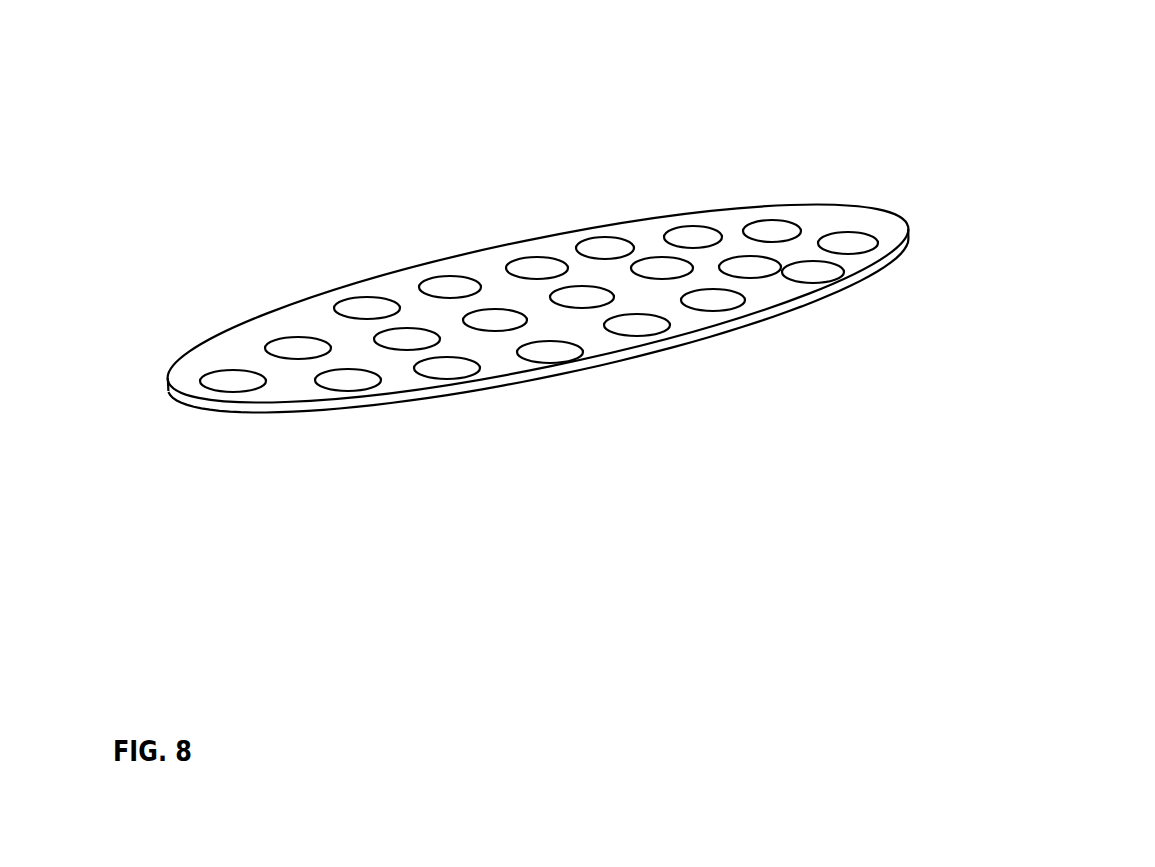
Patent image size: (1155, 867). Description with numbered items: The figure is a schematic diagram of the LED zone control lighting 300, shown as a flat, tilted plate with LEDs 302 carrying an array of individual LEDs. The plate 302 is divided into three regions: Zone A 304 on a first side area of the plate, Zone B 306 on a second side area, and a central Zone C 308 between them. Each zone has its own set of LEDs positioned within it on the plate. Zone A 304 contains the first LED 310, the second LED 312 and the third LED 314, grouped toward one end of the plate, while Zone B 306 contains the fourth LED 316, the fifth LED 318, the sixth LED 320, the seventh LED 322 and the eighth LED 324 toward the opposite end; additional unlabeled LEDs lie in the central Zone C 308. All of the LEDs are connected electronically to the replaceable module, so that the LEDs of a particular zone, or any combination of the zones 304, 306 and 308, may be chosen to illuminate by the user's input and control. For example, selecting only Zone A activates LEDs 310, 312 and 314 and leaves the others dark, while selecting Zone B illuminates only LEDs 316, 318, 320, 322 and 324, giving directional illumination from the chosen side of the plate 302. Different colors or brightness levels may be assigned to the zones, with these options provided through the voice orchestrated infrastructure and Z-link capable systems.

The LED zone control lighting 300 is at (586, 411).
The LED plate 302 is at (809, 336).
The Zone A 304 is at (256, 359).
The Zone B 306 is at (759, 210).
The Zone C 308 is at (598, 324).
The LED 1 310 is at (267, 346).
The LED 2 312 is at (227, 392).
The LED 3 314 is at (353, 391).
The LED 4 316 is at (610, 239).
The LED 5 318 is at (694, 227).
The LED 6 320 is at (775, 222).
The LED 7 322 is at (835, 241).
The LED 8 324 is at (840, 272).